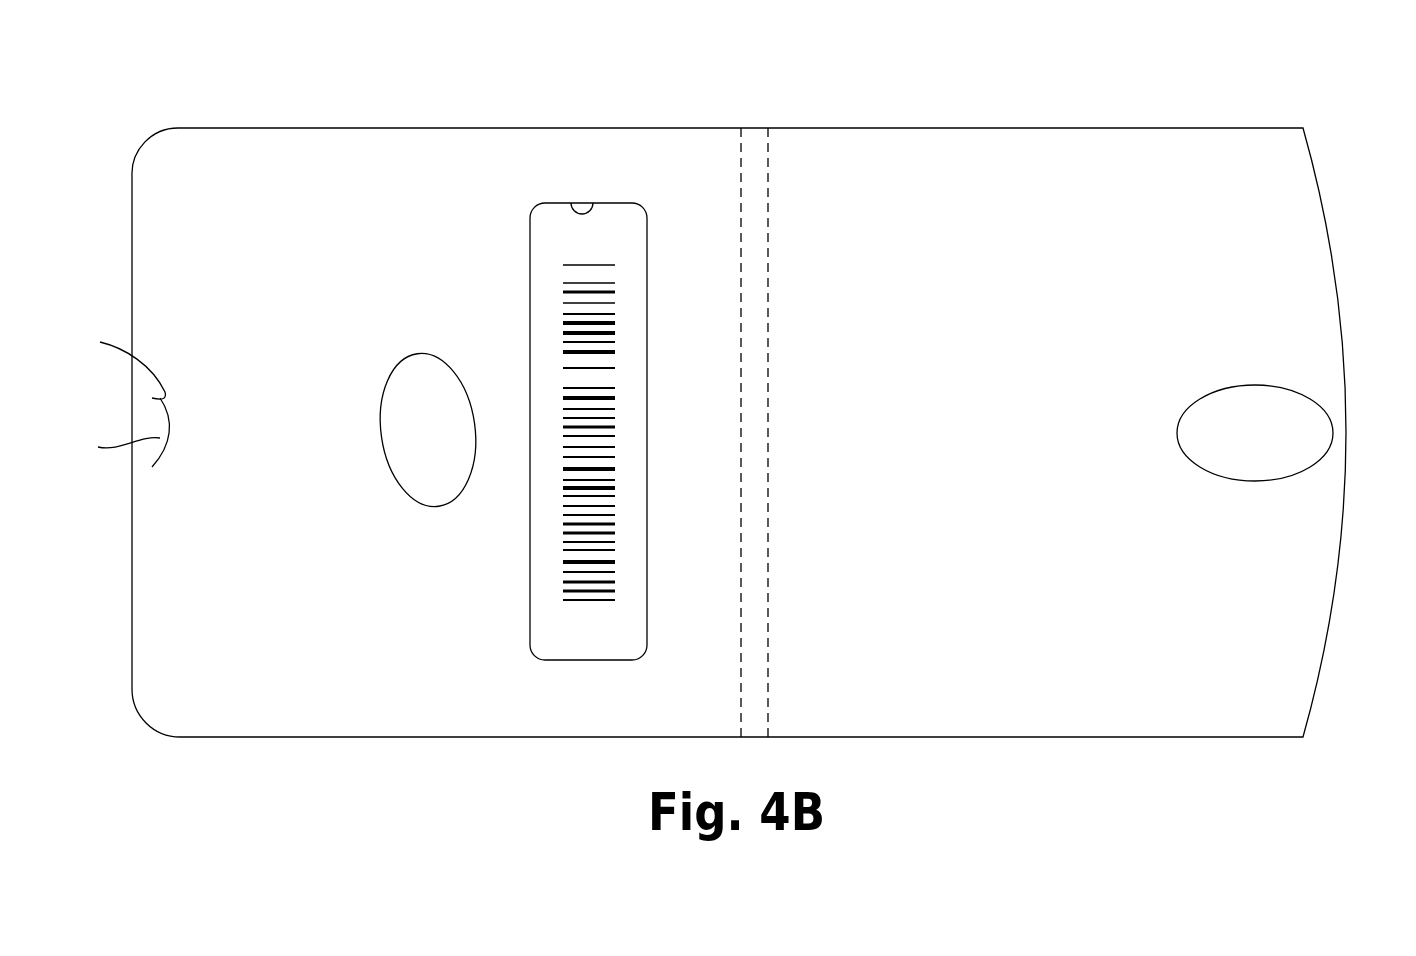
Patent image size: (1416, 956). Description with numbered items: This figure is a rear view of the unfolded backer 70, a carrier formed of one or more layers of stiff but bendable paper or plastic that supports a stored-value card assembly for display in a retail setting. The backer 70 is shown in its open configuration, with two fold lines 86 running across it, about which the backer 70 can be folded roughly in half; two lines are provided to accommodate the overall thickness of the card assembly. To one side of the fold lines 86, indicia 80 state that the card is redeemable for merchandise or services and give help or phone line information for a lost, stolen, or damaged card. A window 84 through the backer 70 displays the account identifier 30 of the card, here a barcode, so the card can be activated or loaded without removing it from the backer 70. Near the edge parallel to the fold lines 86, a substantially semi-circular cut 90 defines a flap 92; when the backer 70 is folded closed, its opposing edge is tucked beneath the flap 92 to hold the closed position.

The backer 70 is at (1226, 78).
The indicia 80 is at (285, 242).
The window 84 is at (592, 203).
The fold lines 86 is at (768, 185).
The account identifier 30 is at (583, 607).
The cut 90 is at (122, 393).
The flap 92 is at (116, 448).